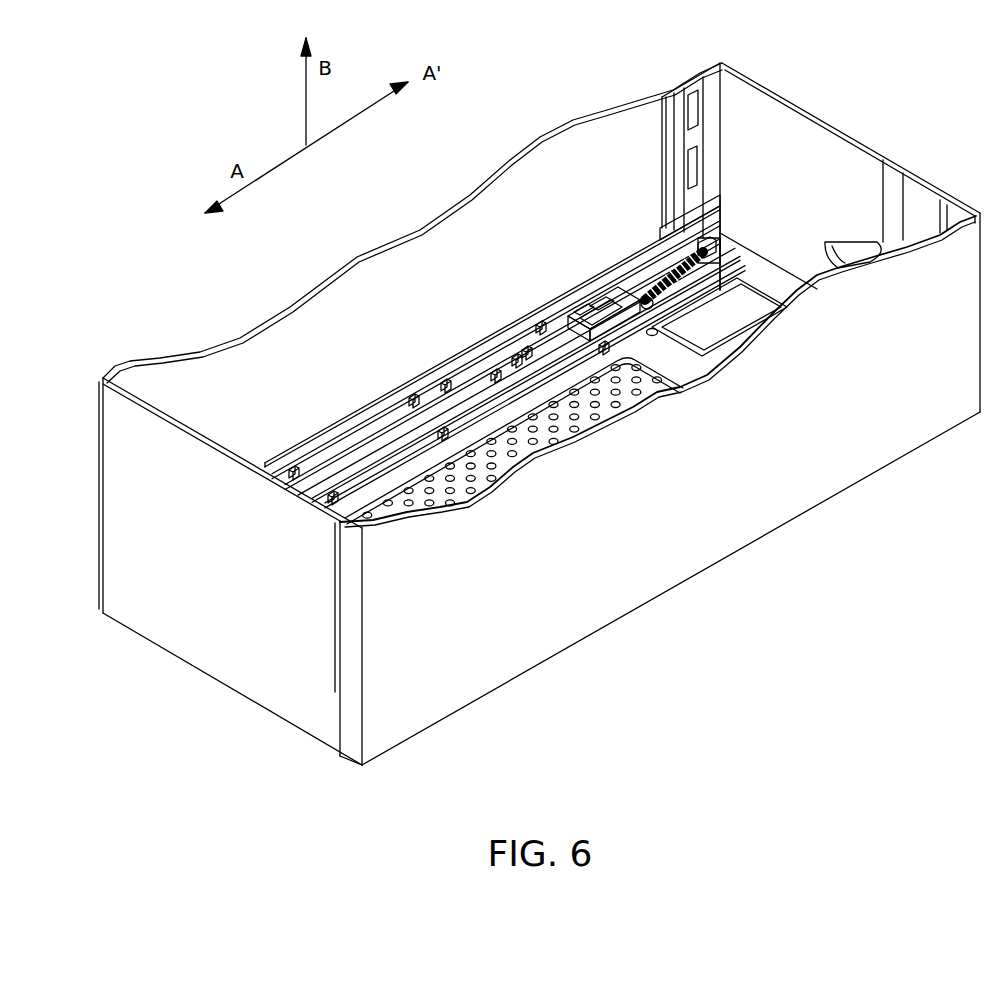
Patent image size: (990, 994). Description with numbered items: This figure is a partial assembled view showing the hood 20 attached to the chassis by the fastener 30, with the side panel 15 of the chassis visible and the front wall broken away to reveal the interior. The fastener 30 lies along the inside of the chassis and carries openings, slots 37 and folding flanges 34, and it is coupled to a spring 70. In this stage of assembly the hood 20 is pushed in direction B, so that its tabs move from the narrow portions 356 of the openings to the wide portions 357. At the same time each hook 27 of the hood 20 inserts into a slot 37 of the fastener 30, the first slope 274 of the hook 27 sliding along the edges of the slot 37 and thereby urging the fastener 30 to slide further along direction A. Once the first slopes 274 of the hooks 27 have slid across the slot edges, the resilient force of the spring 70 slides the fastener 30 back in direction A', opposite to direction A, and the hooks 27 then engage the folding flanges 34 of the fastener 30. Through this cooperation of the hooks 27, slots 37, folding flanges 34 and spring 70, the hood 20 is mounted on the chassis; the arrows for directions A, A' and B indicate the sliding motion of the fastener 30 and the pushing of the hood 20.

The side panel 15 is at (793, 143).
The hood 20 is at (633, 155).
The hook 27 is at (588, 306).
The fastener 30 is at (360, 453).
The folding flange 34 is at (625, 305).
The slot 37 is at (607, 303).
The spring 70 is at (693, 243).
The first slope 274 is at (580, 310).
The narrow portion 356 is at (518, 355).
The wide portion 357 is at (525, 355).